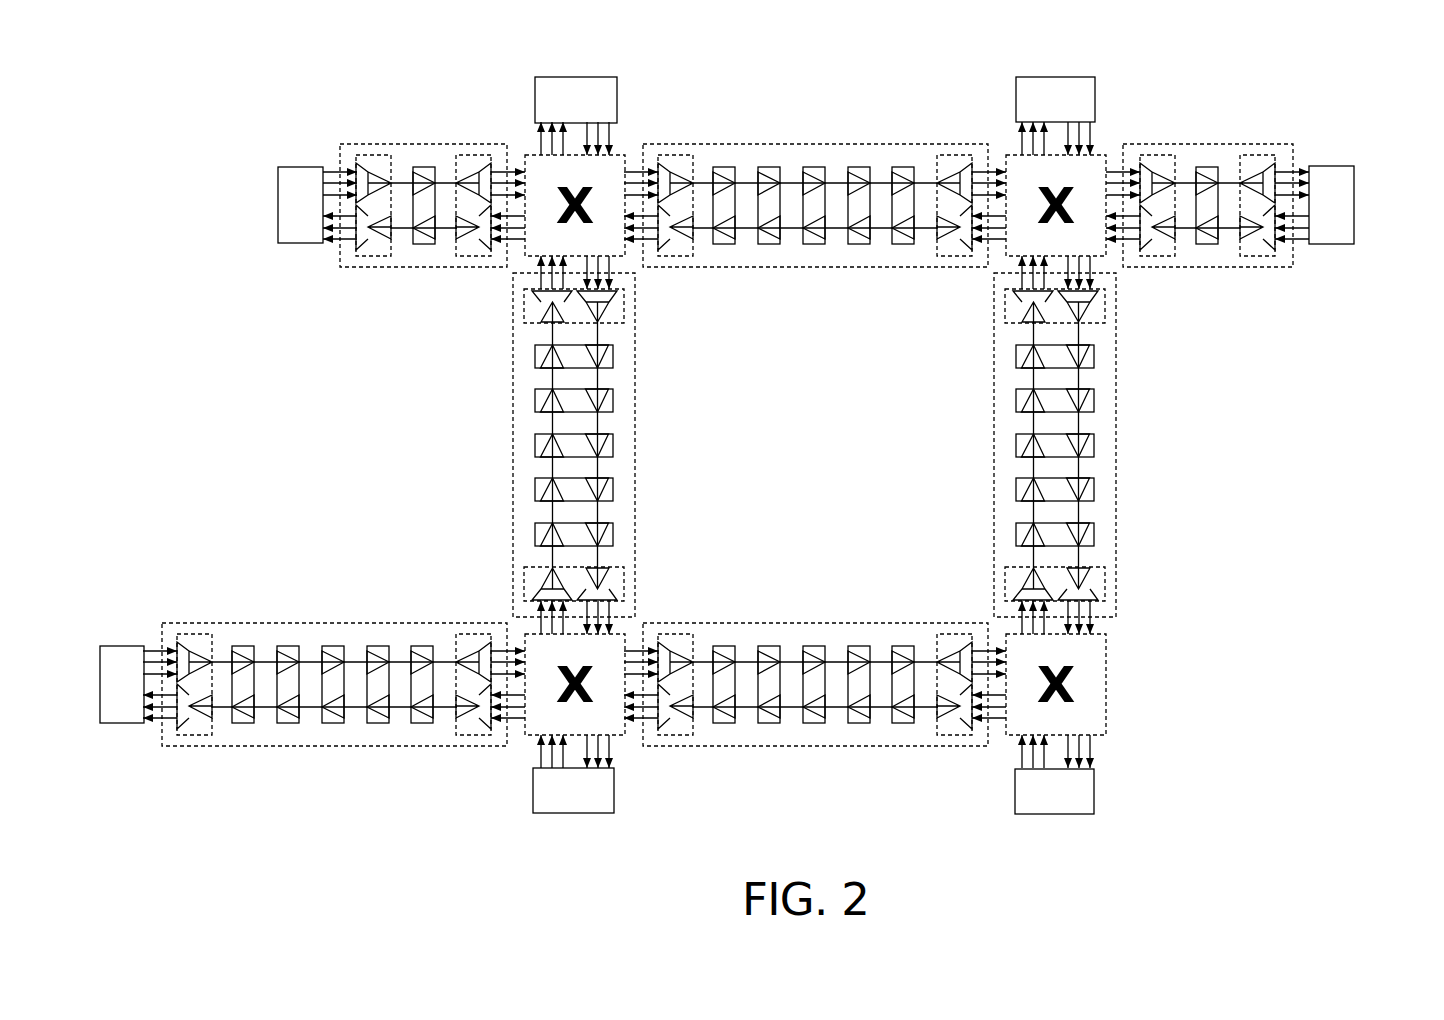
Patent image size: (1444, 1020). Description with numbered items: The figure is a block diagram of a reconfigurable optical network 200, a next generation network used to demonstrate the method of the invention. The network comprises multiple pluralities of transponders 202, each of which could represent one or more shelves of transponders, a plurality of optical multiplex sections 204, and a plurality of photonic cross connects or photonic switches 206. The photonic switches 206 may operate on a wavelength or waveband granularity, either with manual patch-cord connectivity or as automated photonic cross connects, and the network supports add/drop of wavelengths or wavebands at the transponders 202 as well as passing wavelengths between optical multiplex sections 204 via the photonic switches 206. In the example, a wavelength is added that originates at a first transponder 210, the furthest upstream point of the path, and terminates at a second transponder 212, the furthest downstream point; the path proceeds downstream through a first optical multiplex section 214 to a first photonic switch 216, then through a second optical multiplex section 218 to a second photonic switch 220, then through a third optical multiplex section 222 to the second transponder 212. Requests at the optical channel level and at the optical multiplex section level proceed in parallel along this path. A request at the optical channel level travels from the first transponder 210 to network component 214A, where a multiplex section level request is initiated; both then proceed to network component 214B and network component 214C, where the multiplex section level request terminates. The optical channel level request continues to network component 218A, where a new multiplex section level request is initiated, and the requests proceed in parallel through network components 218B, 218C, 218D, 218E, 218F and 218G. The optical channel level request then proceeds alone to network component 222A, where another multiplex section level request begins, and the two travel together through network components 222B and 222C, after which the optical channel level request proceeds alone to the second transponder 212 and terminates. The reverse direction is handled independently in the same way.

The reconfigurable optical network 200 is at (760, 451).
The transponders 202 is at (760, 451).
The optical multiplex sections 204 is at (756, 392).
The photonic switches 206 is at (798, 434).
The first transponder 210 is at (277, 203).
The second transponder 212 is at (1356, 203).
The first optical multiplex section 214 is at (381, 220).
The network component 214A is at (357, 257).
The network component 214B is at (423, 245).
The network component 214C is at (477, 257).
The first photonic switch 216 is at (626, 152).
The second optical multiplex section 218 is at (815, 226).
The network component 218A is at (675, 257).
The network component 218B is at (727, 246).
The network component 218C is at (771, 246).
The network component 218D is at (815, 246).
The network component 218E is at (858, 246).
The network component 218F is at (903, 246).
The network component 218G is at (955, 257).
The second photonic switch 220 is at (1107, 154).
The third optical multiplex section 222 is at (1208, 227).
The network component 222A is at (1155, 257).
The network component 222B is at (1207, 246).
The network component 222C is at (1258, 257).